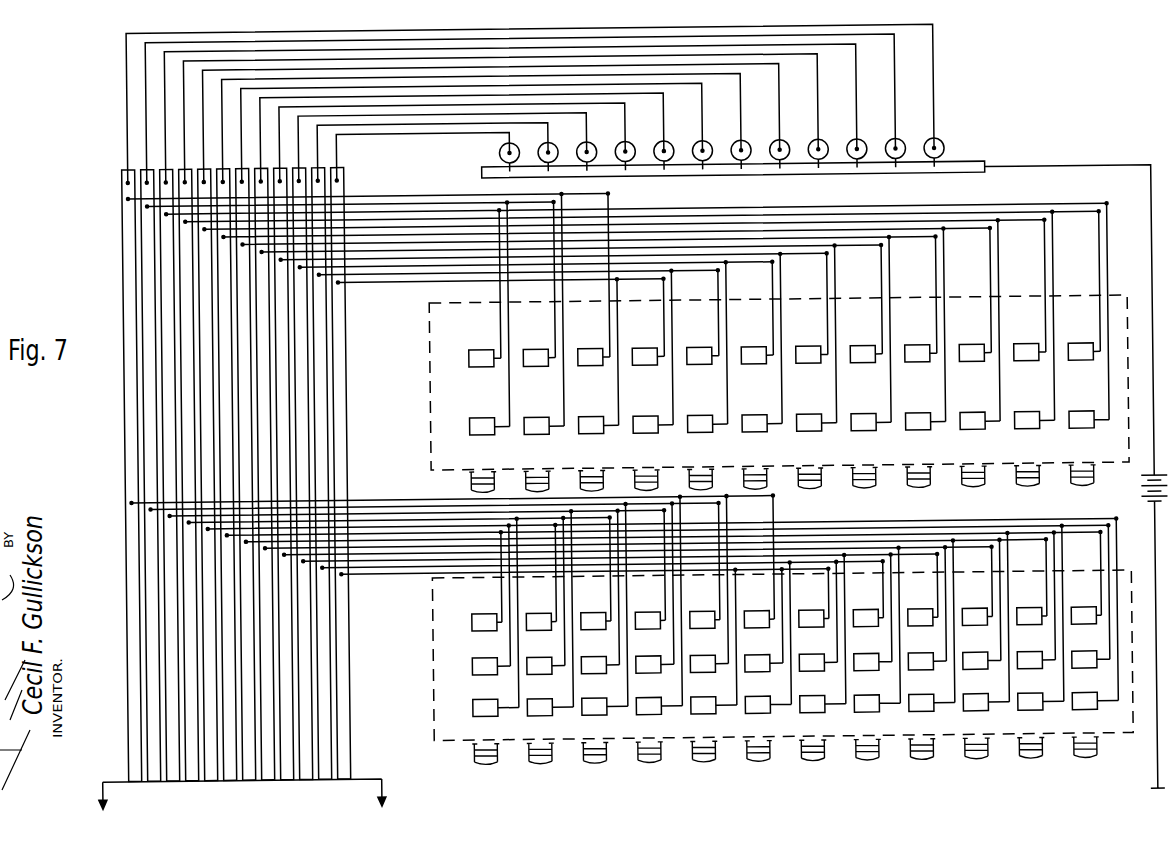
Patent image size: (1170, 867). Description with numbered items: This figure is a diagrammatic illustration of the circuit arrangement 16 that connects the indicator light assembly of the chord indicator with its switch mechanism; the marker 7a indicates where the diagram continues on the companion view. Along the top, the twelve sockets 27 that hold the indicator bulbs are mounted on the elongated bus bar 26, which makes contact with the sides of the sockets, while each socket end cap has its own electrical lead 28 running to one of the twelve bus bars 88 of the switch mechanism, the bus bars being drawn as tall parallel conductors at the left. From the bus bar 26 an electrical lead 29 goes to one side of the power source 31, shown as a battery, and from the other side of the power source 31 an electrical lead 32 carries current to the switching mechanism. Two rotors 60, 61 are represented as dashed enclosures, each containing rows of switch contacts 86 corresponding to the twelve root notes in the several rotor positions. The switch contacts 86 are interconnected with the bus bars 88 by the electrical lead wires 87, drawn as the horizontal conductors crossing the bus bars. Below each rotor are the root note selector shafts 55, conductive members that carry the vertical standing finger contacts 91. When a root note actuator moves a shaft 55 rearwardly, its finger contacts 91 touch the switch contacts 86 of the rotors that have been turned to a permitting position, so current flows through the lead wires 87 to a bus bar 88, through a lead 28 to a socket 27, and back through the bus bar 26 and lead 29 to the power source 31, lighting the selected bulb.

The circuit arrangement 16 is at (1120, 143).
The bus bar 26 is at (963, 170).
The sockets 27 is at (942, 150).
The electrical leads 28 is at (165, 121).
The electrical lead 29 is at (1151, 200).
The power source 31 is at (1138, 495).
The electrical lead 32 is at (1151, 785).
The root note selector shafts 55 is at (980, 496).
The rotor 60 is at (1127, 640).
The rotor 61 is at (1126, 394).
The switch contacts 86 is at (1090, 422).
The electrical lead wires 87 is at (378, 203).
The bus bars 88 is at (127, 270).
The finger contacts 91 is at (1066, 490).
The section line 7a is at (244, 804).